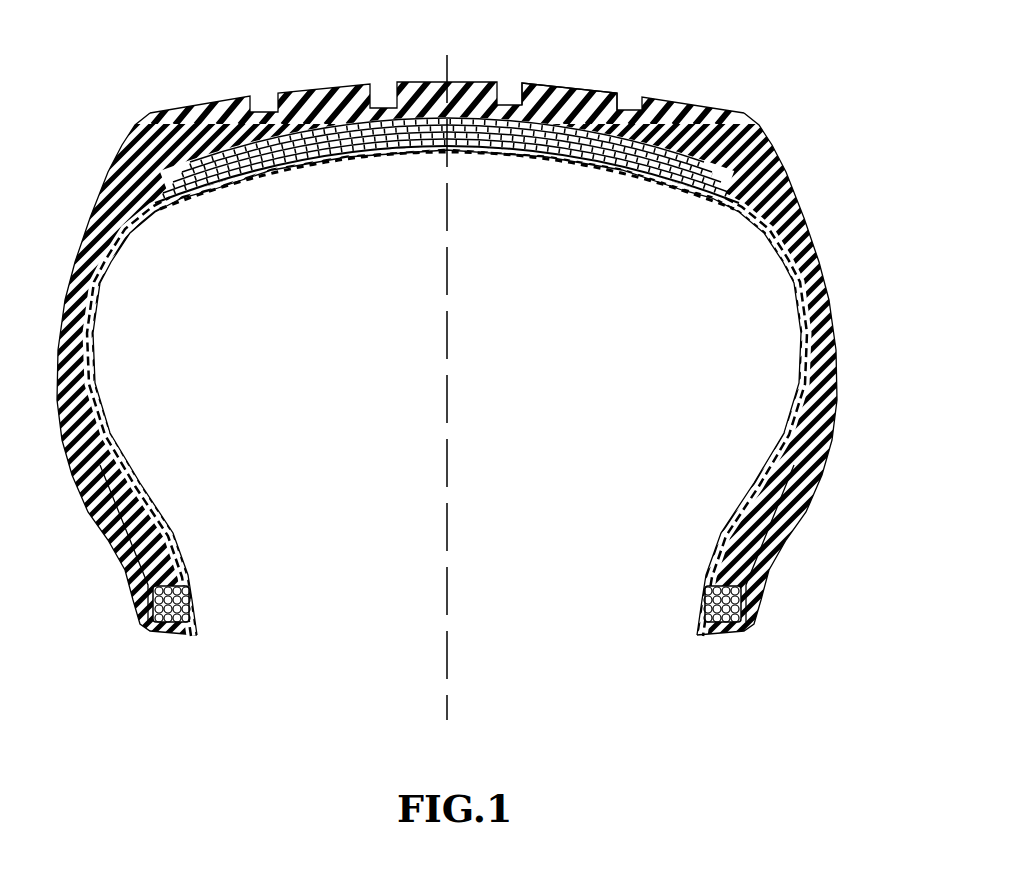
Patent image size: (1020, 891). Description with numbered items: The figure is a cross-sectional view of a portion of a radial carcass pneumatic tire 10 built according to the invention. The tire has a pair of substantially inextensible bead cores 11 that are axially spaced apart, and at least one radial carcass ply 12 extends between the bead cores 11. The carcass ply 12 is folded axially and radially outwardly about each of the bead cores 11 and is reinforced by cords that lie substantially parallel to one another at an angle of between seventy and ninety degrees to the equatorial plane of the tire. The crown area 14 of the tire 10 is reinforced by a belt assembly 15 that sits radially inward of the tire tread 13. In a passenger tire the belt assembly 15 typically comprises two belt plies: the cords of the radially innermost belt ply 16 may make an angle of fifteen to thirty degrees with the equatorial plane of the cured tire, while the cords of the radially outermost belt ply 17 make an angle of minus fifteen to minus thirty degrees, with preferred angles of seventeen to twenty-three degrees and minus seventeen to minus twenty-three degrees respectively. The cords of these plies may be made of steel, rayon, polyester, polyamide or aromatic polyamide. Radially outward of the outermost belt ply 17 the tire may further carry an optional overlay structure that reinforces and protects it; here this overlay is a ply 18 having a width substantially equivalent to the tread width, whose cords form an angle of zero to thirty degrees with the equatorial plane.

The radial carcass pneumatic tire 10 is at (510, 445).
The bead cores 11 is at (750, 627).
The radial carcass ply 12 is at (810, 353).
The tire tread 13 is at (318, 90).
The crown area 14 is at (757, 122).
The belt assembly 15 is at (672, 150).
The radially innermost belt ply 16 is at (287, 160).
The radially outermost belt ply 17 is at (457, 127).
The overlay ply 18 is at (580, 90).